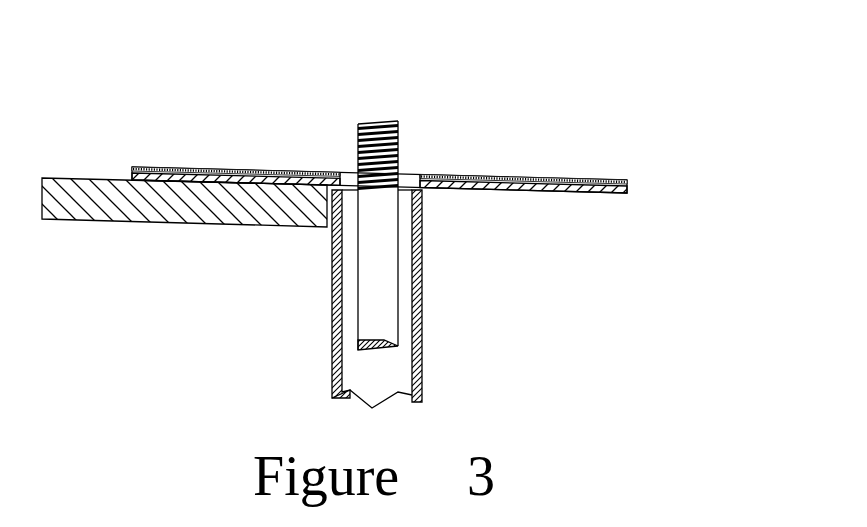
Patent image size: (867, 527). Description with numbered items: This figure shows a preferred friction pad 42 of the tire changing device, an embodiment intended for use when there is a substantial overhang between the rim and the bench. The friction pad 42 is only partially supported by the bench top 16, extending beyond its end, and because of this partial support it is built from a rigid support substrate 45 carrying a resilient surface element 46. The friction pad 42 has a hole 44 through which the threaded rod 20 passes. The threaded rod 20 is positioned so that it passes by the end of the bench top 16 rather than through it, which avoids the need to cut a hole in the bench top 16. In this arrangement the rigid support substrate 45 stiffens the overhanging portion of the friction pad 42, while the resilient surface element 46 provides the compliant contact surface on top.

The bench top 16 is at (90, 180).
The threaded rod 20 is at (363, 122).
The friction pad 42 is at (640, 192).
The hole 44 is at (440, 152).
The rigid support substrate 45 is at (530, 193).
The resilient surface element 46 is at (215, 167).